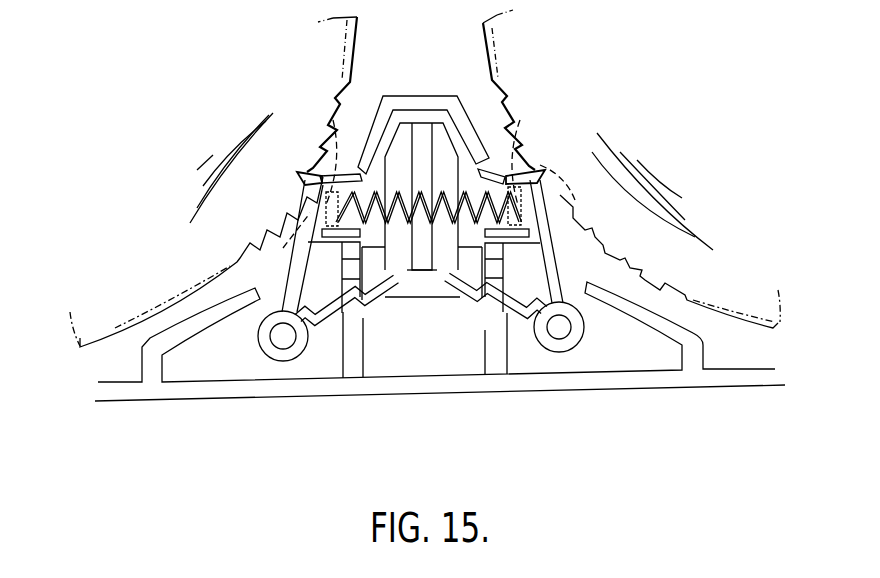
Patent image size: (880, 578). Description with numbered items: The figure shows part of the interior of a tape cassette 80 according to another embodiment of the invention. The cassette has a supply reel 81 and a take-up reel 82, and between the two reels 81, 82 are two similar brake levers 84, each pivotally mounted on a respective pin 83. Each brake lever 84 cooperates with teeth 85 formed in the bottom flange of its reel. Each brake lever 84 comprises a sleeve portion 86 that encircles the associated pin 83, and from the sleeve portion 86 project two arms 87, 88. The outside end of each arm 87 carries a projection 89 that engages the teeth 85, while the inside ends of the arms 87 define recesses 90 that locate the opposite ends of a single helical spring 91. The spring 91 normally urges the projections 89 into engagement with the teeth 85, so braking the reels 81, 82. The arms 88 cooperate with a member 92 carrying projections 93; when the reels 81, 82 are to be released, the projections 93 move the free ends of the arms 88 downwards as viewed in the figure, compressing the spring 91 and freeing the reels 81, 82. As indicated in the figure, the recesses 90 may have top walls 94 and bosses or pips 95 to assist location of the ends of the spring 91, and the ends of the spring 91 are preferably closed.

The tape cassette 80 is at (437, 40).
The supply reel 81 is at (249, 94).
The take-up reel 82 is at (604, 84).
The pin 83 is at (278, 340).
The brake lever 84 is at (258, 352).
The teeth 85 is at (238, 257).
The sleeve portion 86 is at (292, 353).
The arm 87 is at (302, 228).
The arm 88 is at (357, 362).
The projection 89 is at (310, 168).
The recess 90 is at (332, 119).
The helical spring 91 is at (418, 193).
The member 92 is at (425, 288).
The projection 93 is at (392, 252).
The top wall 94 is at (339, 222).
The boss or pip 95 is at (557, 159).